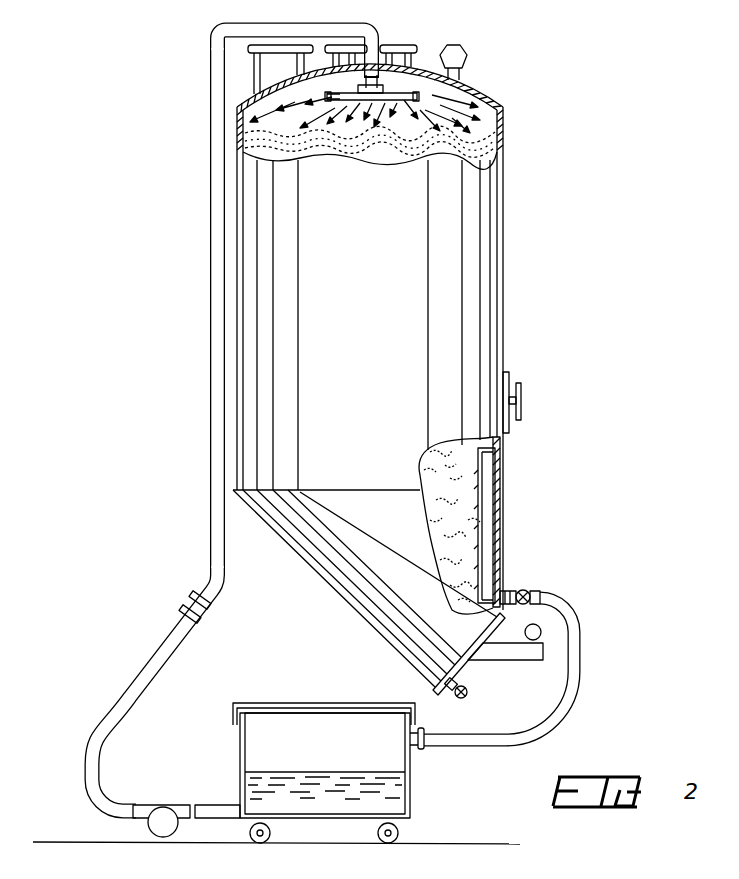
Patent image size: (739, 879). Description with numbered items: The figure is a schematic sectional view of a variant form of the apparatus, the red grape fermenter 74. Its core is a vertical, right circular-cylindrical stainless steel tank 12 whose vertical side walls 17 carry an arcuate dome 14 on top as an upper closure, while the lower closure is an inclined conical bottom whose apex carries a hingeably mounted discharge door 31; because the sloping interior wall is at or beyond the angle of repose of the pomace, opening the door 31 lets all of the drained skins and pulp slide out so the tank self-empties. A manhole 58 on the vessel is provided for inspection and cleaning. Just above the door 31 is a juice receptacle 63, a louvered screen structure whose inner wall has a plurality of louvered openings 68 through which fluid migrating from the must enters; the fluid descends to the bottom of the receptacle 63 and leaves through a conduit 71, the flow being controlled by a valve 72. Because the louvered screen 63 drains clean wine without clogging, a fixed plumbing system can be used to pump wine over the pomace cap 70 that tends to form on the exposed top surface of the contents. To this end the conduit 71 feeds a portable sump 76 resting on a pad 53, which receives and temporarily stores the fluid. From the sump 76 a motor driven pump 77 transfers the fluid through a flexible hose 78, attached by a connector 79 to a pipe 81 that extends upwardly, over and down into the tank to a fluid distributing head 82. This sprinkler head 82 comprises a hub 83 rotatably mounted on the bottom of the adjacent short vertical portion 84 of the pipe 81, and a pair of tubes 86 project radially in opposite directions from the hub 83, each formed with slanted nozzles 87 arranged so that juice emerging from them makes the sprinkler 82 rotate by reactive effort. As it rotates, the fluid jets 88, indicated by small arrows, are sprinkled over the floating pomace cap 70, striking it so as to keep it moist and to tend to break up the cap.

The cylindrical tank 12 is at (505, 220).
The dome 14 is at (490, 96).
The vertical side walls 17 is at (500, 147).
The discharge door 31 is at (470, 663).
The pad 53 is at (455, 845).
The manhole 58 is at (509, 377).
The juice receptacle 63 is at (505, 487).
The louvered openings 68 is at (482, 484).
The pomace cap 70 is at (447, 128).
The conduit 71 is at (560, 597).
The valve 72 is at (524, 590).
The red grape fermenter 74 is at (585, 254).
The portable sump 76 is at (410, 796).
The motor driven pump 77 is at (165, 826).
The flexible hose 78 is at (128, 705).
The connector 79 is at (198, 620).
The pipe 81 is at (210, 186).
The fluid distributing head 82 is at (413, 92).
The hub 83 is at (369, 86).
The short vertical portion 84 is at (364, 58).
The tubes 86 is at (328, 94).
The slanted nozzles 87 is at (338, 101).
The fluid jets 88 is at (378, 122).